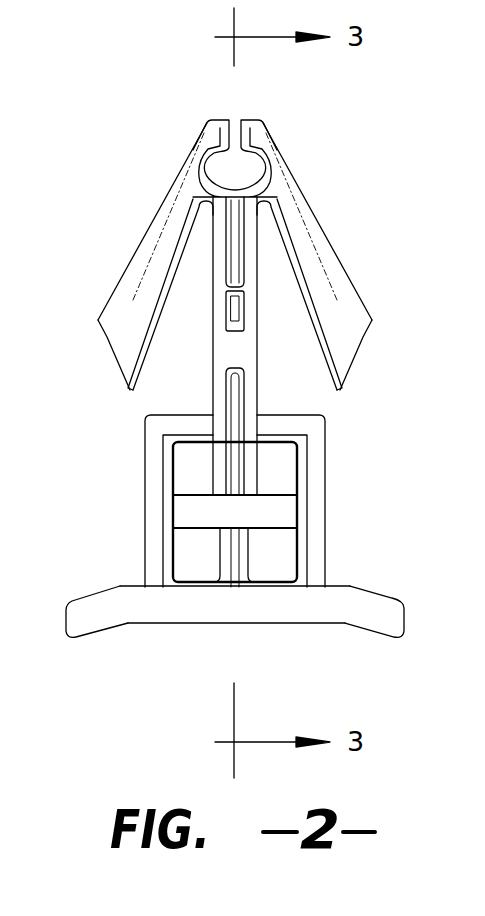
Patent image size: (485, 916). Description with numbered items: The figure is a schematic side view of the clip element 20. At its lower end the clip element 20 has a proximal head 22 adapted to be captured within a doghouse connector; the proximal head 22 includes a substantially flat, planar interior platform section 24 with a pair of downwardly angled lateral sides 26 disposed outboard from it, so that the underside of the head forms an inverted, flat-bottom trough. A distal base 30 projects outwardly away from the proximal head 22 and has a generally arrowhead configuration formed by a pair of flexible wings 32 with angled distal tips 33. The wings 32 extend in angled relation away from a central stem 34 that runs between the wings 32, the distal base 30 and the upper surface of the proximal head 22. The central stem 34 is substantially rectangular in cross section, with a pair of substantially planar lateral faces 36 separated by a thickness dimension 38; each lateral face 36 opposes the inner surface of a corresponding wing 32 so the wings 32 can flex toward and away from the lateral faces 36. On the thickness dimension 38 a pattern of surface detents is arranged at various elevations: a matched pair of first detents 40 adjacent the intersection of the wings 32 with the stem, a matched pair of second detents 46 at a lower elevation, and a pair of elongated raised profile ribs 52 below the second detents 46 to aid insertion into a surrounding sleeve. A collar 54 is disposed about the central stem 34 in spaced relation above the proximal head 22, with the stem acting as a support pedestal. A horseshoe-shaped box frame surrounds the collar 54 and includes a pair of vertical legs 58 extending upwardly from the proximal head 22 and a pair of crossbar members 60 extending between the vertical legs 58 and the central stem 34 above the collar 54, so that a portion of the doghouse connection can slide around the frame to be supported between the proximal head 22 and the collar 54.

The clip element 20 is at (396, 132).
The proximal head 22 is at (251, 615).
The interior platform section 24 is at (247, 624).
The lateral sides 26 is at (103, 590).
The distal base 30 is at (173, 187).
The flexible wings 32 is at (237, 256).
The angled distal tips 33 is at (105, 350).
The central stem 34 is at (207, 263).
The lateral faces 36 is at (203, 295).
The thickness dimension 38 is at (232, 350).
The first detents 40 is at (245, 247).
The second detents 46 is at (246, 312).
The raised profile ribs 52 is at (232, 447).
The collar 54 is at (280, 507).
The vertical legs 58 is at (160, 547).
The crossbar members 60 is at (283, 450).